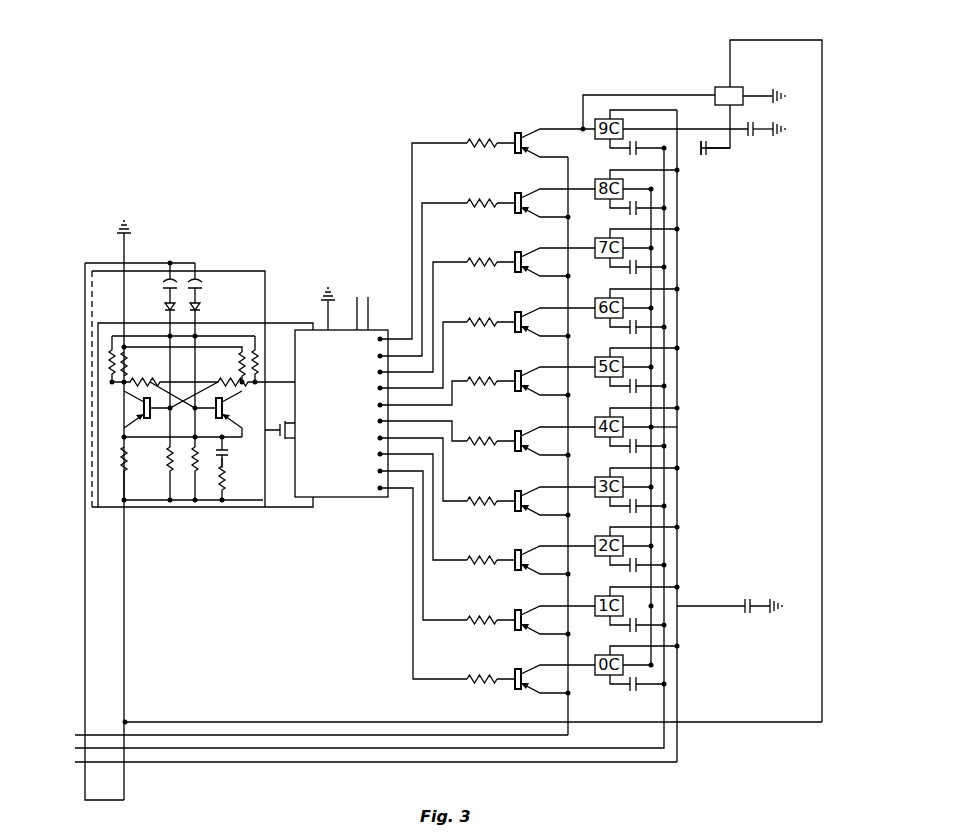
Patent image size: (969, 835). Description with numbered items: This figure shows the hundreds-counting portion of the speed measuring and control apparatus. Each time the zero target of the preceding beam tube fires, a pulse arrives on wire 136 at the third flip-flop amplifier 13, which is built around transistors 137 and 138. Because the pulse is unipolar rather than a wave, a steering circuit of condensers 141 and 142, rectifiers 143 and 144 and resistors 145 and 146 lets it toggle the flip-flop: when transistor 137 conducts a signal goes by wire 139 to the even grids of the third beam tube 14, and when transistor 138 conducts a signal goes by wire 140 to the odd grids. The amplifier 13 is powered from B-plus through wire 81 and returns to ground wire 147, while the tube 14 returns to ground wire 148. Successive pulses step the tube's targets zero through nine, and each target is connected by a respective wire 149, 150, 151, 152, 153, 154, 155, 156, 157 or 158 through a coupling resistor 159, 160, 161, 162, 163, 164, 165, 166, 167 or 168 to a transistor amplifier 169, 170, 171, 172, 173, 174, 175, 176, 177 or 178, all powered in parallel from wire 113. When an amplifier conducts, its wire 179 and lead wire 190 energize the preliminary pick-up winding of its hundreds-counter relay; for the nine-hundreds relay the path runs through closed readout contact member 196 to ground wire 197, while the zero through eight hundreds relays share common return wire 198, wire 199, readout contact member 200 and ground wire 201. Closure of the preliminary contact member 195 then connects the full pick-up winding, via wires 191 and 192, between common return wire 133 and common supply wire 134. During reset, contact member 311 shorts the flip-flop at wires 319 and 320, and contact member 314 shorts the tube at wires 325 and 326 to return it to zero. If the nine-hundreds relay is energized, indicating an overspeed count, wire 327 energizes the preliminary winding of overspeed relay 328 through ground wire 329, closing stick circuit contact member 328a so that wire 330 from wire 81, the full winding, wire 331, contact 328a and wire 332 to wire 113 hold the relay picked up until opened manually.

The third flip-flop amplifier 13 is at (235, 272).
The third beam tube 14 is at (355, 497).
The wire 81 is at (126, 543).
The wire 113 is at (124, 723).
The common return wire 133 is at (80, 736).
The common supply wire 134 is at (124, 762).
The wire 136 is at (84, 791).
The transistor 137 is at (144, 408).
The transistor 138 is at (218, 408).
The wire 139 is at (286, 384).
The wire 140 is at (268, 323).
The condenser 141 is at (165, 281).
The condenser 142 is at (201, 283).
The rectifier 143 is at (164, 307).
The rectifier 144 is at (206, 307).
The resistor 145 is at (115, 362).
The resistor 146 is at (241, 362).
The ground wire 147 is at (124, 240).
The ground wire 148 is at (330, 292).
The wire 149 is at (413, 668).
The wire 150 is at (423, 608).
The wire 151 is at (433, 548).
The wire 152 is at (443, 486).
The wire 153 is at (452, 426).
The wire 154 is at (452, 398).
The wire 155 is at (443, 337).
The wire 156 is at (433, 280).
The wire 157 is at (422, 221).
The wire 158 is at (412, 161).
The coupling resistor 159 is at (470, 679).
The coupling resistor 160 is at (470, 620).
The coupling resistor 161 is at (485, 560).
The coupling resistor 162 is at (485, 501).
The coupling resistor 163 is at (488, 441).
The coupling resistor 164 is at (484, 381).
The coupling resistor 165 is at (480, 322).
The coupling resistor 166 is at (470, 262).
The coupling resistor 167 is at (467, 202).
The coupling resistor 168 is at (467, 142).
The transistor amplifier 169 is at (515, 690).
The transistor amplifier 170 is at (515, 632).
The transistor amplifier 171 is at (515, 572).
The transistor amplifier 172 is at (515, 513).
The transistor amplifier 173 is at (515, 453).
The transistor amplifier 174 is at (515, 374).
The transistor amplifier 175 is at (515, 315).
The transistor amplifier 176 is at (515, 255).
The transistor amplifier 177 is at (515, 196).
The transistor amplifier 178 is at (515, 136).
The wire 179 is at (565, 664).
The lead wire 190 is at (651, 665).
The wire 191 is at (610, 110).
The wire 192 is at (664, 684).
The preliminary contact member 195 is at (627, 687).
The contact member 196 is at (763, 129).
The ground wire 197 is at (763, 133).
The common return wire 198 is at (678, 427).
The wire 199 is at (762, 567).
The contact member 200 is at (750, 602).
The ground wire 201 is at (752, 614).
The contact member 311 is at (223, 462).
The contact member 314 is at (222, 408).
The wire 319 is at (229, 453).
The wire 320 is at (227, 482).
The wire 325 is at (287, 424).
The wire 326 is at (287, 438).
The wire 327 is at (638, 95).
The overspeed relay 328 is at (715, 88).
The stick circuit contact member 328a is at (710, 153).
The ground wire 329 is at (754, 95).
The wire 330 is at (728, 50).
The wire 331 is at (730, 118).
The wire 332 is at (700, 152).